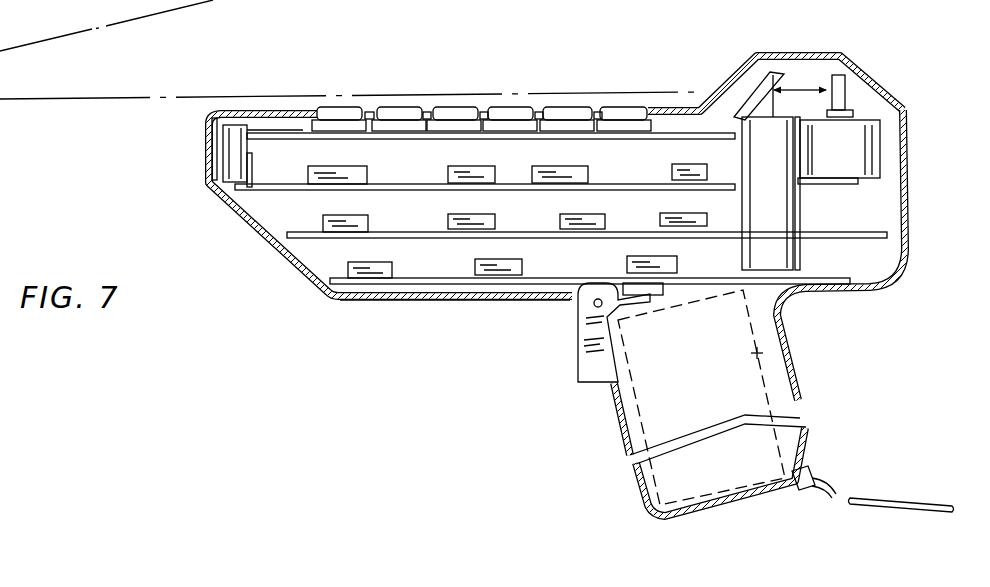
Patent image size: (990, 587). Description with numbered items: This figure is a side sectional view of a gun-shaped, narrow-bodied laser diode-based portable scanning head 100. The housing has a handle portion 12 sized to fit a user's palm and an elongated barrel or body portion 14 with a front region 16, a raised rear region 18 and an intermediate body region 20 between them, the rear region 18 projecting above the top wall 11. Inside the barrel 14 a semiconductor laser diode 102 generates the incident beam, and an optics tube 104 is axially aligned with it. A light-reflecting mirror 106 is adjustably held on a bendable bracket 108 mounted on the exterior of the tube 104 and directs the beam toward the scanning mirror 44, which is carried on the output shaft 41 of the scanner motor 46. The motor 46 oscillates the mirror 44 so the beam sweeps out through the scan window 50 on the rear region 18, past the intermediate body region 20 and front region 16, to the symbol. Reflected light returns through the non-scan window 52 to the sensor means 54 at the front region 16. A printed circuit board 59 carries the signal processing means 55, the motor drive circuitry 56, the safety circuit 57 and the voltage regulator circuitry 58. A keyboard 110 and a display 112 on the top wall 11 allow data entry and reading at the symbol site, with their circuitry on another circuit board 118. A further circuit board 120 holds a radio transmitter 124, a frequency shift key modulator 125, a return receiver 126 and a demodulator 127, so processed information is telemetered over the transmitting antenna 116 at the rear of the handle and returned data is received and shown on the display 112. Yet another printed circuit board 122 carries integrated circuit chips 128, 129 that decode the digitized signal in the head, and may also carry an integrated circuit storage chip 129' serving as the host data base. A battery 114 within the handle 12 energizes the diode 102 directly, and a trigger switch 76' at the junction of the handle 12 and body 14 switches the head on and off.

The top wall 11 is at (483, 105).
The handle portion 12 is at (609, 426).
The body portion 14 is at (445, 302).
The front region 16 is at (232, 107).
The raised rear region 18 is at (776, 52).
The intermediate body region 20 is at (428, 106).
The output shaft 41 is at (847, 94).
The scanning mirror 44 is at (830, 75).
The scanner motor 46 is at (882, 150).
The scan window 50 is at (800, 75).
The non-scan window 52 is at (207, 155).
The sensor means 54 is at (250, 156).
The signal processing means 55 is at (357, 168).
The drive circuitry 56 is at (481, 173).
The safety circuit 57 is at (590, 168).
The voltage regulator circuitry 58 is at (705, 170).
The printed circuit board 59 is at (409, 182).
The trigger switch 76' is at (601, 335).
The gun-shaped head 100 is at (548, 318).
The semiconductor laser diode 102 is at (801, 247).
The optics tube 104 is at (801, 203).
The light-reflecting mirror 106 is at (776, 100).
The bendable bracket 108 is at (732, 106).
The keyboard 110 is at (528, 108).
The display 112 is at (345, 108).
The battery 114 is at (775, 353).
The transmitting antenna 116 is at (864, 497).
The circuit board 118 is at (612, 136).
The circuit board 120 is at (888, 223).
The printed circuit board 122 is at (894, 272).
The radio transmitter 124 is at (366, 224).
The frequency shift key modulator 125 is at (490, 222).
The return receiver 126 is at (600, 222).
The demodulator 127 is at (686, 215).
The integrated circuit chip 128 is at (392, 270).
The integrated circuit chip 129 is at (523, 261).
The integrated circuit storage chip 129' is at (590, 261).